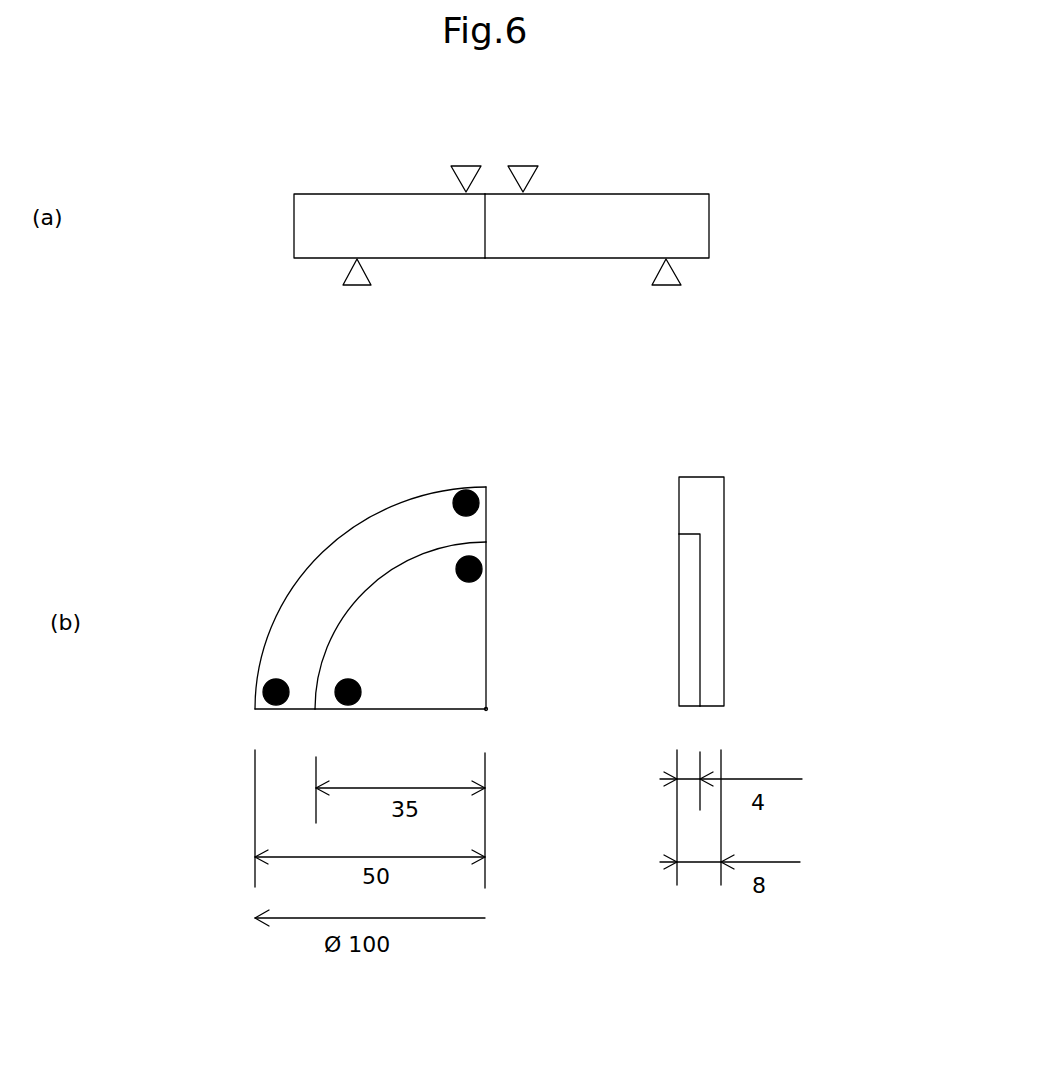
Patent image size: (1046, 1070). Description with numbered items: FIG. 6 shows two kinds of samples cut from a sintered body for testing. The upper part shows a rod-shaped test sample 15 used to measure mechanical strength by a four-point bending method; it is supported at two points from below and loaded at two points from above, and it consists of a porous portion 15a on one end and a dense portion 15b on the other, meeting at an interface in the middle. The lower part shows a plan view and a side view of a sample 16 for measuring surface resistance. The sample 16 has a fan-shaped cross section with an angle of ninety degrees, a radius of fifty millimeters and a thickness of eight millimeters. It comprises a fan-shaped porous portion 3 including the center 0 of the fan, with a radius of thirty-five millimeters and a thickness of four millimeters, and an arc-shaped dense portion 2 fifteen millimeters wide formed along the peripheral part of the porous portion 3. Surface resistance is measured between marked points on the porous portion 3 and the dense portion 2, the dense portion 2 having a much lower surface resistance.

The test sample 15 is at (538, 167).
The porous portion 15a is at (337, 207).
The dense portion 15b is at (593, 208).
The sample 16 is at (527, 556).
The dense portion 2 is at (353, 553).
The porous portion 3 is at (455, 637).
The center of the fan 0 is at (487, 710).